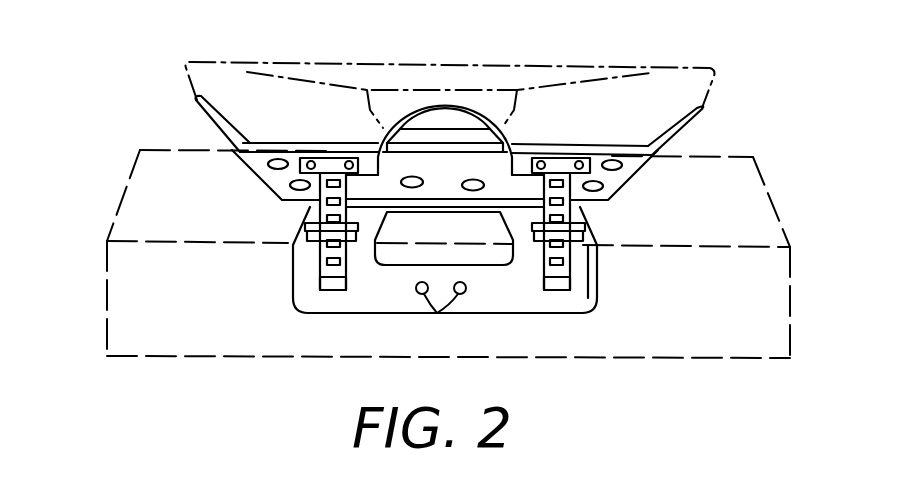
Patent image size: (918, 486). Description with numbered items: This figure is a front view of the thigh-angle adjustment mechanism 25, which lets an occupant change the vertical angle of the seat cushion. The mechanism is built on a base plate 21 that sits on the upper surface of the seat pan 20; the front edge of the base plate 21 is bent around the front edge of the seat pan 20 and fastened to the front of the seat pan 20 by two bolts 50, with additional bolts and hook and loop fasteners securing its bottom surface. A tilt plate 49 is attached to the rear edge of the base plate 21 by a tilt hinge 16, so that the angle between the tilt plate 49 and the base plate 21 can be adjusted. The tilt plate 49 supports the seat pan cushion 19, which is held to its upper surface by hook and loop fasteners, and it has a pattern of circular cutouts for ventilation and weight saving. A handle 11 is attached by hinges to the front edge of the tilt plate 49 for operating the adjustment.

The seat pan 20 is at (160, 177).
The seat pan cushion 19 is at (593, 113).
The thigh-angle adjustment mechanism 25 is at (192, 132).
The handle 11 is at (405, 124).
The tilt hinge 16 is at (452, 185).
The tilt plate 49 is at (630, 180).
The base plate 21 is at (292, 220).
The bolts 50 is at (437, 313).